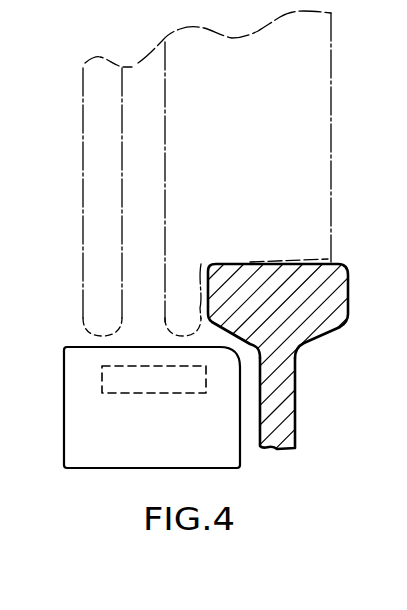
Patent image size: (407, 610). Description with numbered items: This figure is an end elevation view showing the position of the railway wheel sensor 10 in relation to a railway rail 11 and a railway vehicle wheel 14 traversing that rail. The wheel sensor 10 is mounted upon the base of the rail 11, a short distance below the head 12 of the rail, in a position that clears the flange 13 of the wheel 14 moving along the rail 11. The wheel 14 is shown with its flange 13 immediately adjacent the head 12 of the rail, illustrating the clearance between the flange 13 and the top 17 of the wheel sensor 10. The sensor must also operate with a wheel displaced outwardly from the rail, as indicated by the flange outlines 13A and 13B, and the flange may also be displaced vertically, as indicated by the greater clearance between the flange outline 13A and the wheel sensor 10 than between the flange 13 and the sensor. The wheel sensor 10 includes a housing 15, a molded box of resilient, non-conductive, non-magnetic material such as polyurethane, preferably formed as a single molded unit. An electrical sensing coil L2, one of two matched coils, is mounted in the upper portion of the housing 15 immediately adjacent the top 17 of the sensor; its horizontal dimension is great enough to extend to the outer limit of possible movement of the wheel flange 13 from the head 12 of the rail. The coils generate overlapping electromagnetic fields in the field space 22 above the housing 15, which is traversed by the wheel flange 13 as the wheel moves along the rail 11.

The railway wheel sensor 10 is at (400, 97).
The railway rail 11 is at (295, 428).
The head of the rail 12 is at (321, 318).
The flange of a railway vehicle wheel 13 is at (201, 265).
The flange outline 13A is at (160, 318).
The flange outline 13B is at (83, 300).
The railway vehicle wheel 14 is at (313, 191).
The housing 15 is at (135, 465).
The top of the wheel sensor 17 is at (82, 346).
The field space 22 is at (140, 337).
The electrical sensing coil L2 is at (132, 393).